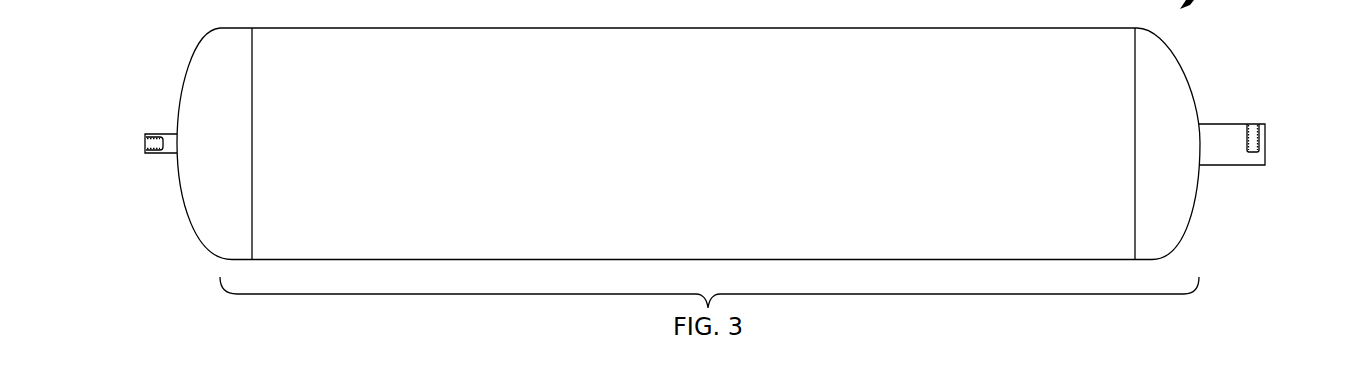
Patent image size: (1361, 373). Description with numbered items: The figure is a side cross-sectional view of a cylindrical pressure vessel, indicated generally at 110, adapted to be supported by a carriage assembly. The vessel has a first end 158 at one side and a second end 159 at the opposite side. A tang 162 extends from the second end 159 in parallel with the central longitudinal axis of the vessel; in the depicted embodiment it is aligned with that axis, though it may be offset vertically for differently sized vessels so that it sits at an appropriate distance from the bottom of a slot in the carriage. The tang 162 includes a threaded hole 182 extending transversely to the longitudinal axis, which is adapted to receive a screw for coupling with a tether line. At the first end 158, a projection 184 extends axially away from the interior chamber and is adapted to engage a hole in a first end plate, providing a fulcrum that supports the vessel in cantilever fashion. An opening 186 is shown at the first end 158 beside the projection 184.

The pressure vessel / tank 110 is at (385, 28).
The first end 158 is at (220, 227).
The second end 159 is at (1167, 225).
The tang 162 is at (1265, 143).
The threaded hole 182 is at (1253, 124).
The projection 184 is at (167, 134).
The threaded opening 186 is at (146, 141).